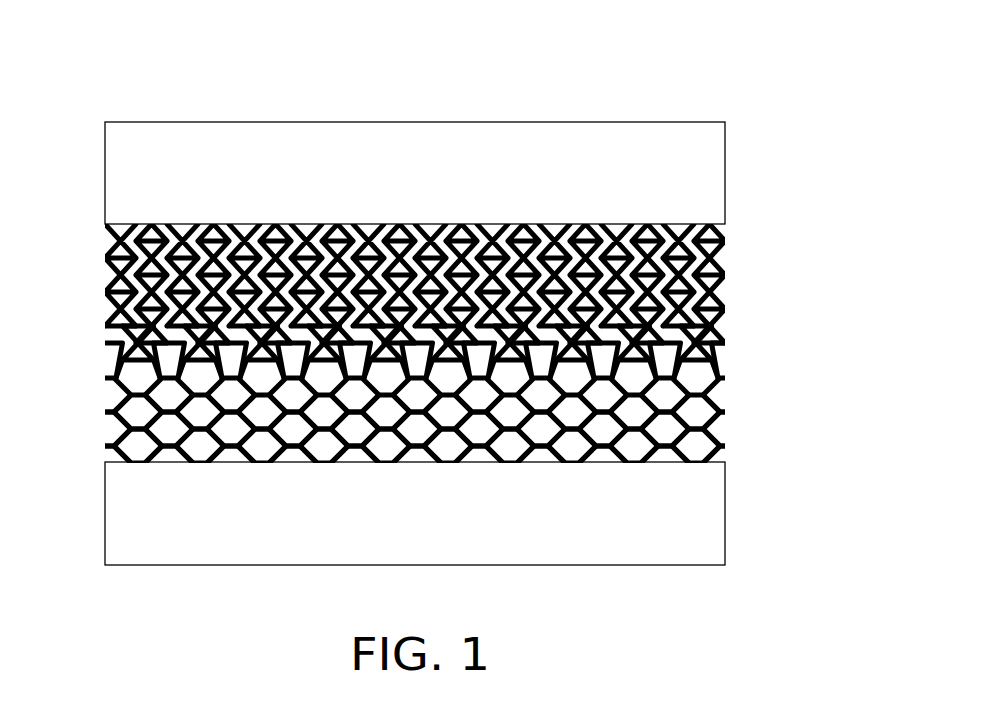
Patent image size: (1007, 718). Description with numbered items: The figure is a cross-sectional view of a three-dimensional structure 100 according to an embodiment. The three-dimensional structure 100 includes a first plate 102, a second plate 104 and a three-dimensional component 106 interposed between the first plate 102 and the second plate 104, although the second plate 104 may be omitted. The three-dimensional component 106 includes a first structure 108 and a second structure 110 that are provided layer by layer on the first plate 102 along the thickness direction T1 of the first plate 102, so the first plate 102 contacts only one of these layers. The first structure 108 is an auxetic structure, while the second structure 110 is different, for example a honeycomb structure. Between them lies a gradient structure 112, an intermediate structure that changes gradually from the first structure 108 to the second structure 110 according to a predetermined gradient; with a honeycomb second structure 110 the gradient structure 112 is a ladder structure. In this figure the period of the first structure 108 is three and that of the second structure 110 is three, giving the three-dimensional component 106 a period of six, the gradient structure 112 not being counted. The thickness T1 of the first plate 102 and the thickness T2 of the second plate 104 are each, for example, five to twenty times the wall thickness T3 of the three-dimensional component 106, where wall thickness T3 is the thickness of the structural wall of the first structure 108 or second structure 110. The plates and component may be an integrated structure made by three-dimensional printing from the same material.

The three-dimensional structure 100 is at (704, 42).
The first plate 102 is at (700, 173).
The second plate 104 is at (700, 521).
The three-dimensional component 106 is at (460, 352).
The first structure 108 is at (748, 224).
The second structure 110 is at (444, 421).
The gradient structure 112 is at (103, 345).
The thickness of the first plate T1 is at (105, 224).
The thickness of the second plate T2 is at (105, 565).
The wall thickness T3 is at (105, 300).